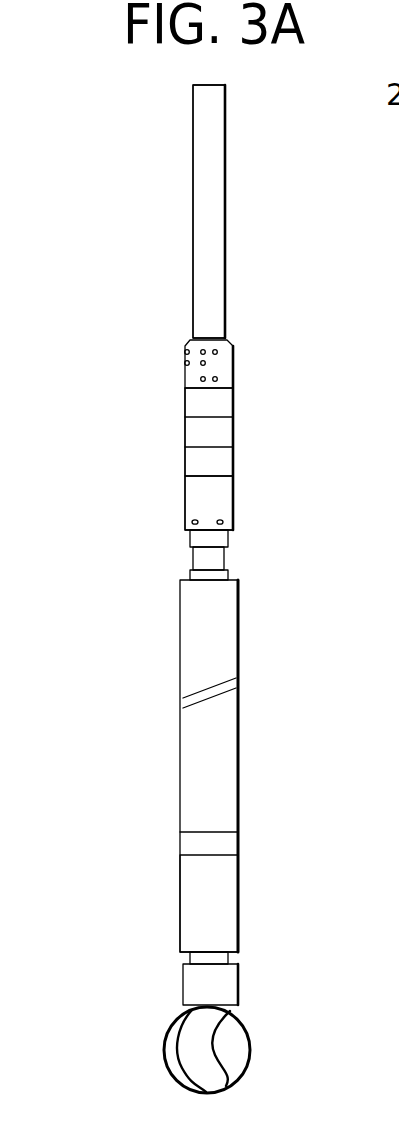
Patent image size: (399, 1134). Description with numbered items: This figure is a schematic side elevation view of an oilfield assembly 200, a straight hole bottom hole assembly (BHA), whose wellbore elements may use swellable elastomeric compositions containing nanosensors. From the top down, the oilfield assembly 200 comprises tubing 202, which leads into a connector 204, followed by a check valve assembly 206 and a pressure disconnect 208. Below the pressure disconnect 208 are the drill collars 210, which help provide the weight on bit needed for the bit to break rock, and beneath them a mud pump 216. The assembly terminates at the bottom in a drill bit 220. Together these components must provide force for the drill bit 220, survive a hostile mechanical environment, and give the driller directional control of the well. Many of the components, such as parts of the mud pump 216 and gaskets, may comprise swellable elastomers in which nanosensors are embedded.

The oilfield assembly 200 is at (134, 152).
The tubing 202 is at (227, 218).
The connector 204 is at (235, 362).
The check valve assembly 206 is at (235, 415).
The pressure disconnect 208 is at (235, 518).
The drill collars 210 is at (238, 638).
The mud pump 216 is at (238, 903).
The drill bit 220 is at (252, 1043).